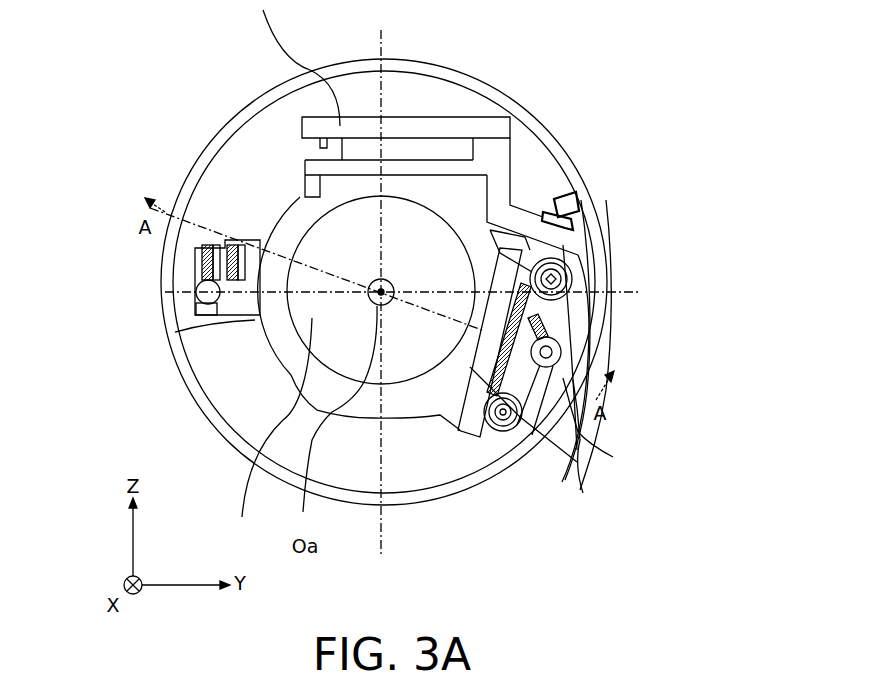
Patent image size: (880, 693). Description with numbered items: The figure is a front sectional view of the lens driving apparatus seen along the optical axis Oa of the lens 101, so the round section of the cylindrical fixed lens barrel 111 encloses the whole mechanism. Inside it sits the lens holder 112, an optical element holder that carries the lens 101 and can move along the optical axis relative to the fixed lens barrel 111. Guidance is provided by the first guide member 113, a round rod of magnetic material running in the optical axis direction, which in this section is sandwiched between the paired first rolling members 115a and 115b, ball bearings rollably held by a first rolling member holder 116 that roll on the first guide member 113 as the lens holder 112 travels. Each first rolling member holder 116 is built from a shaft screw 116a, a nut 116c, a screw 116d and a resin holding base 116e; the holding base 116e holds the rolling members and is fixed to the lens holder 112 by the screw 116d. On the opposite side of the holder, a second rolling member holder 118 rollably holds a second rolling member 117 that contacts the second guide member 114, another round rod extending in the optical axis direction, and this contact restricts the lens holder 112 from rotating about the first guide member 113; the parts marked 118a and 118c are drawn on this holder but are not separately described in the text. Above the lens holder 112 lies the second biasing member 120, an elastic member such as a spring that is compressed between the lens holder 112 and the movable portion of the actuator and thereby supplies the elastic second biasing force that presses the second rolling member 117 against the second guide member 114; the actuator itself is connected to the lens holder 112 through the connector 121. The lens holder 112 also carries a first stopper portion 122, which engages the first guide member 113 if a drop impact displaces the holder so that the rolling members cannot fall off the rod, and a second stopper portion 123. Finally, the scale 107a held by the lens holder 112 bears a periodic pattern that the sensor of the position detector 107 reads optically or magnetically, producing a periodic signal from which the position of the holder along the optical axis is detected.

The lens 101 is at (242, 517).
The position detector 107 is at (576, 202).
The scale 107a is at (573, 223).
The fixed lens barrel 111 is at (588, 180).
The lens holder 112 is at (275, 347).
The first guide member 113 is at (570, 367).
The second guide member 114 is at (195, 313).
The first rolling member 115a is at (606, 300).
The first rolling member 115b is at (613, 457).
The first rolling member holder 116 is at (578, 333).
The shaft screw 116a is at (598, 278).
The nut 116c is at (535, 435).
The screw 116d is at (583, 235).
The holding base 116e is at (563, 378).
The second rolling member 117 is at (195, 247).
The second rolling member holder 118 is at (162, 260).
The spring 118a is at (200, 262).
The shaft 118c is at (197, 294).
The second biasing member 120 is at (300, 148).
The connector 121 is at (500, 157).
The first stopper portion 122 is at (575, 378).
The second stopper portion 123 is at (215, 326).